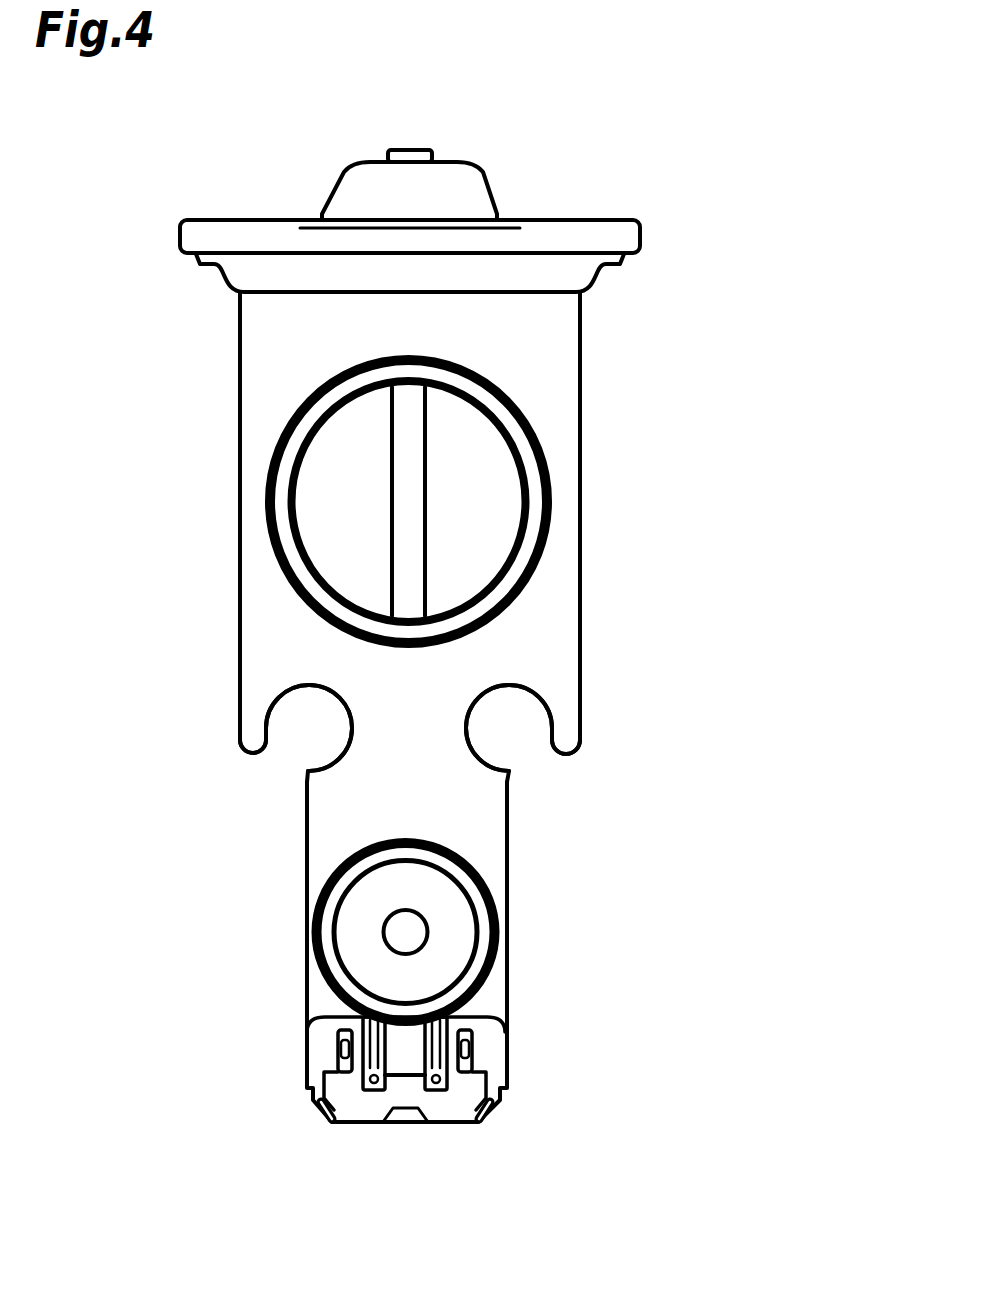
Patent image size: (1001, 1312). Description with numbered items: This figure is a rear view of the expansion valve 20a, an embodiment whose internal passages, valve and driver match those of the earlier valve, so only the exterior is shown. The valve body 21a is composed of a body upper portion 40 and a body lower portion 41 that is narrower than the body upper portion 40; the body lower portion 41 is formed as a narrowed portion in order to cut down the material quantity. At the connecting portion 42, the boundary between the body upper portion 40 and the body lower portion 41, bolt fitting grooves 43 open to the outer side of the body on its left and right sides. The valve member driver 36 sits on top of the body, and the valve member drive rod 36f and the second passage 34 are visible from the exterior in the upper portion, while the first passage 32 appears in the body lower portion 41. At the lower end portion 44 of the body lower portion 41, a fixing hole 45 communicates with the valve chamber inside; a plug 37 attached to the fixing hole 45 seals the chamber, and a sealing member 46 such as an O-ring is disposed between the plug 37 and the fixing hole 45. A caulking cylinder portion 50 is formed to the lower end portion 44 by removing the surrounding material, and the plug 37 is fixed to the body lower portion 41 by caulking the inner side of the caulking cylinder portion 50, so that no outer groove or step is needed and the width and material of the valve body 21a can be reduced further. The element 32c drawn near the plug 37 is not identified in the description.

The expansion valve 20a is at (679, 182).
The valve member driver 36 is at (487, 187).
The valve member drive rod 36f is at (407, 483).
The valve body 21a is at (586, 357).
The second passage 34 is at (490, 521).
The body upper portion 40 is at (563, 570).
The bolt fitting grooves 43 is at (318, 752).
The connecting portion 42 is at (591, 747).
The body lower portion 41 is at (493, 862).
The first passage 32 is at (450, 952).
The terminal pin 32c is at (362, 1052).
The lower end portion 44 is at (490, 1050).
The sealing member 46 is at (337, 1050).
The fixing hole 45 is at (492, 1105).
The caulking cylinder portion 50 is at (483, 1120).
The plug 37 is at (360, 1108).